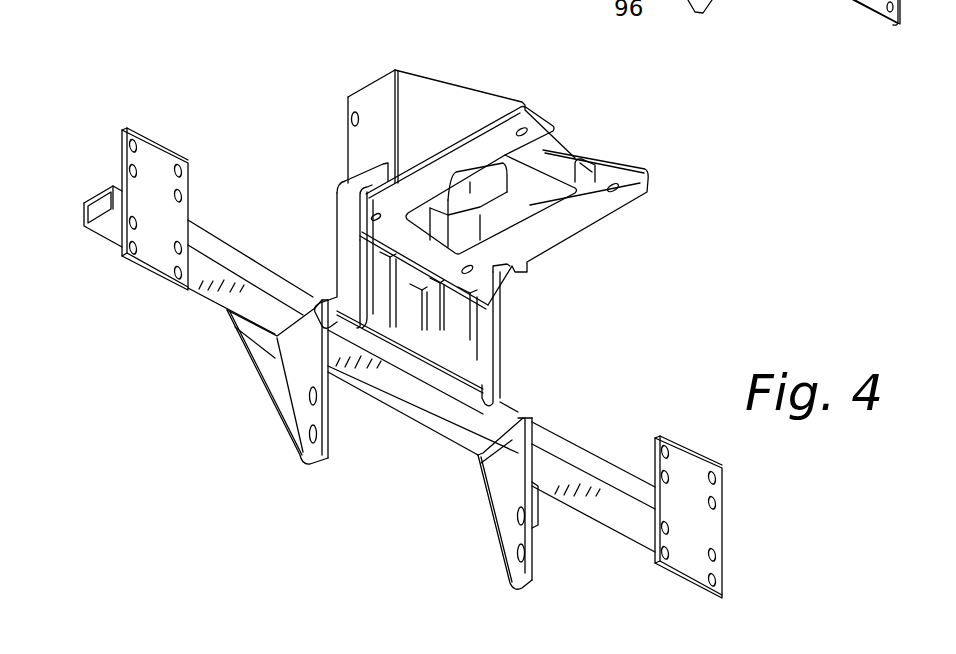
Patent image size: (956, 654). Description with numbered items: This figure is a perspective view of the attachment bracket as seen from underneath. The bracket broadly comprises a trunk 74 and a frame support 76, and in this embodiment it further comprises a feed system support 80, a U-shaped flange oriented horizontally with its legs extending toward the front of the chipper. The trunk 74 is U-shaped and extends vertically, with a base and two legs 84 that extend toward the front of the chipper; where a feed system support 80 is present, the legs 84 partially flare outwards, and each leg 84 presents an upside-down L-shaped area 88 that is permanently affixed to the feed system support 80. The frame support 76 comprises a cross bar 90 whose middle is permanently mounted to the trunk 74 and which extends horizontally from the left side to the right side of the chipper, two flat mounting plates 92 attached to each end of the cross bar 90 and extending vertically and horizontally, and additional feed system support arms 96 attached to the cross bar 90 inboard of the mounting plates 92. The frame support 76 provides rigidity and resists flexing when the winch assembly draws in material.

The trunk 74 is at (342, 72).
The frame support 76 is at (373, 472).
The feed system support 80 is at (477, 157).
The legs 84 is at (363, 140).
The upside-down L-shaped area 88 is at (346, 203).
The cross bar 90 is at (369, 369).
The mounting plates 92 is at (137, 140).
The feed system support arms 96 is at (298, 367).